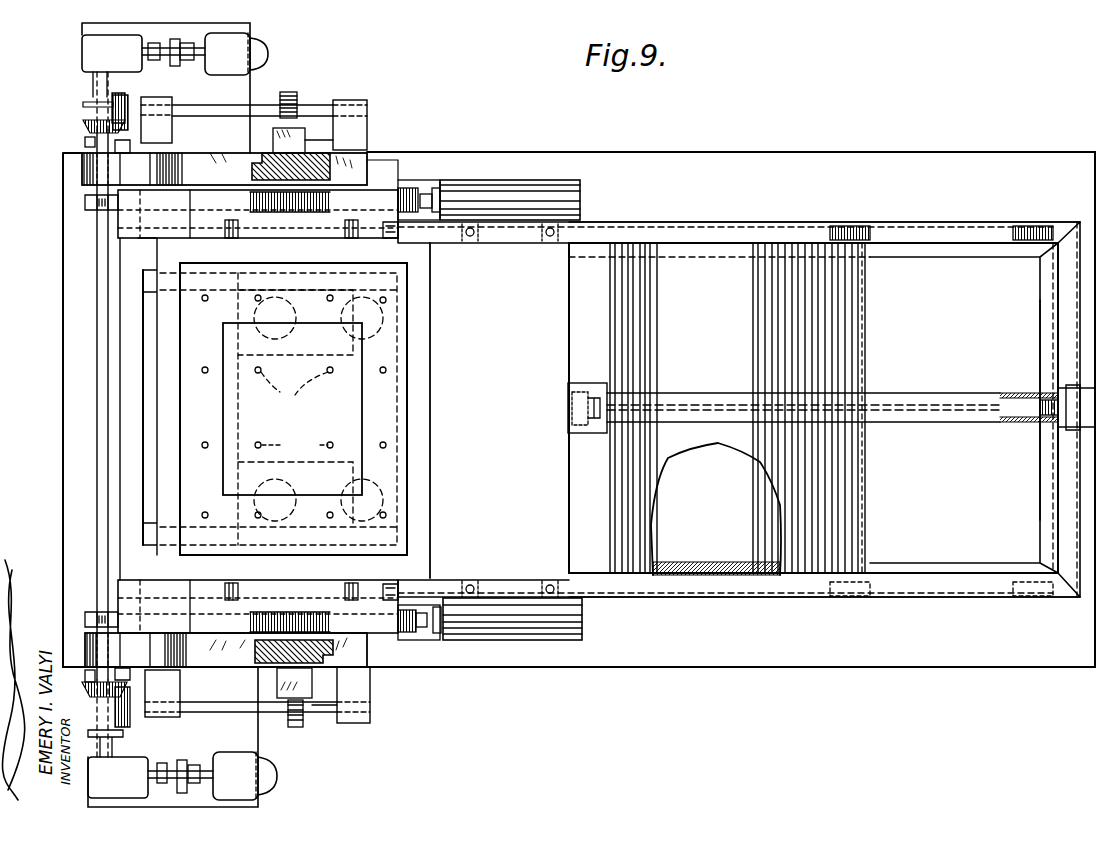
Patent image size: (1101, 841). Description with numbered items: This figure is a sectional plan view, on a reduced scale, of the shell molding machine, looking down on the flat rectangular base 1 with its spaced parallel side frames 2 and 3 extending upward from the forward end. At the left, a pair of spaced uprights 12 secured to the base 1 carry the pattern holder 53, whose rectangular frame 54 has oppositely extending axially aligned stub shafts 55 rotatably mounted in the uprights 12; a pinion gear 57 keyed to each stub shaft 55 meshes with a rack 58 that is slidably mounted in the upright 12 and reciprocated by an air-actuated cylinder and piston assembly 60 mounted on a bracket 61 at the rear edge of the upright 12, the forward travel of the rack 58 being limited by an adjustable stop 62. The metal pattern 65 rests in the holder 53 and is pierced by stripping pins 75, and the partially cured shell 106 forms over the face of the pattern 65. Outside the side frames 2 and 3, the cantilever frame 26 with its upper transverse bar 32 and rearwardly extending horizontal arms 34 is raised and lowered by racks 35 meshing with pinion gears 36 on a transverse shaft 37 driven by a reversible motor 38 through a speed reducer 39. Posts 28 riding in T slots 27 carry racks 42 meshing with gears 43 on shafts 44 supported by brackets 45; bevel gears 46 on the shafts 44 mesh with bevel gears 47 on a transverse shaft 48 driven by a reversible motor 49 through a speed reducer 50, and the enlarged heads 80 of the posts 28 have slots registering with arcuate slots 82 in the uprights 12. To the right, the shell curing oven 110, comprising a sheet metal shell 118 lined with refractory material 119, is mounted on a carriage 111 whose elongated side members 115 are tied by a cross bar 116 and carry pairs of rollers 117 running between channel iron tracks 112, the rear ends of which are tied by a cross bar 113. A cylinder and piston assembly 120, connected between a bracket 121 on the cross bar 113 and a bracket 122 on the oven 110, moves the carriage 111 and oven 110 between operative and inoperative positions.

The base 1 is at (734, 671).
The side frame 2 is at (232, 668).
The side frame 3 is at (80, 170).
The upright 12 is at (392, 178).
The cantilever frame 26 is at (130, 355).
The T slot 27 is at (250, 172).
The post 28 is at (335, 118).
The upper transverse bar 32 is at (128, 467).
The horizontal arm 34 is at (137, 283).
The rack 35 is at (125, 146).
The pinion gear 36 is at (84, 144).
The transverse shaft 37 is at (90, 112).
The reversible motor 38 is at (205, 54).
The speed reducer 39 is at (166, 88).
The rack 42 is at (300, 150).
The gear 43 is at (295, 128).
The shaft 44 is at (222, 116).
The bracket 45 is at (170, 130).
The bevel gear 46 is at (140, 95).
The bevel gear 47 is at (85, 126).
The transverse shaft 48 is at (104, 575).
The reversible motor 49 is at (212, 776).
The speed reducer 50 is at (173, 737).
The pattern holder 53 is at (442, 504).
The rectangular frame 54 is at (433, 470).
The stub shaft 55 is at (268, 226).
The pinion gear 57 is at (248, 202).
The rack 58 is at (420, 190).
The cylinder and piston assembly 60 is at (492, 190).
The bracket 61 is at (524, 244).
The adjustable stop 62 is at (90, 212).
The metal pattern 65 is at (278, 409).
The stripping pin 75 is at (294, 408).
The head 80 is at (380, 160).
The arcuate slot 82 is at (374, 426).
The partially cured shell 106 is at (362, 397).
The shell curing oven 110 is at (556, 342).
The carriage 111 is at (963, 268).
The channel iron track 112 is at (722, 227).
The cross bar 113 is at (1072, 512).
The side member 115 is at (808, 243).
The cross bar 116 is at (1042, 343).
The roller 117 is at (1010, 236).
The sheet metal shell 118 is at (665, 560).
The refractory material 119 is at (702, 560).
The cylinder and piston assembly 120 is at (1010, 393).
The bracket 121 is at (1070, 432).
The bracket 122 is at (578, 425).